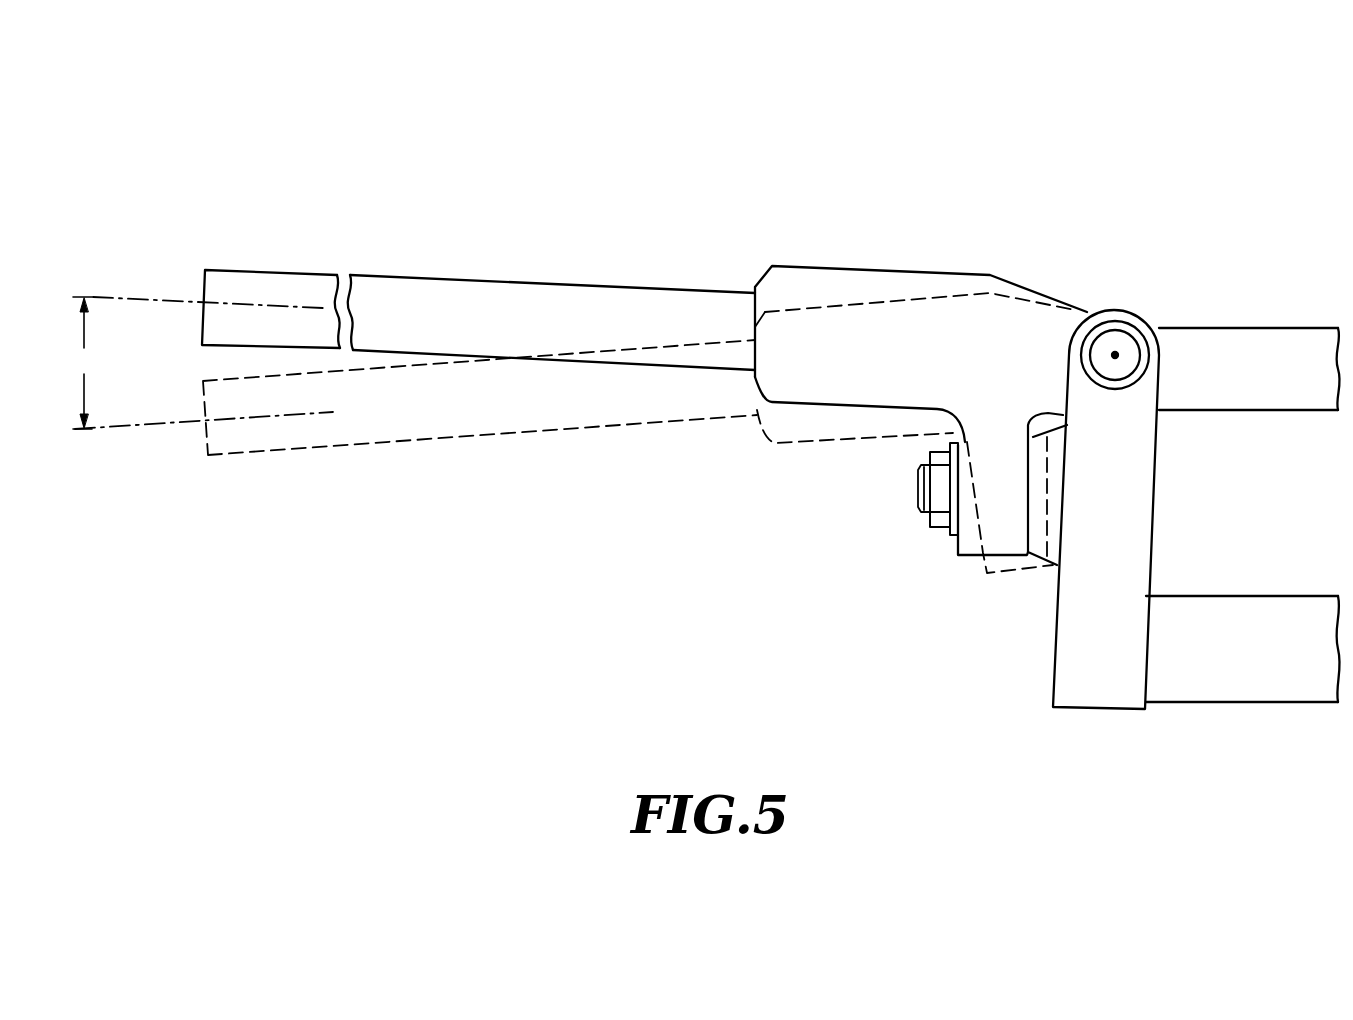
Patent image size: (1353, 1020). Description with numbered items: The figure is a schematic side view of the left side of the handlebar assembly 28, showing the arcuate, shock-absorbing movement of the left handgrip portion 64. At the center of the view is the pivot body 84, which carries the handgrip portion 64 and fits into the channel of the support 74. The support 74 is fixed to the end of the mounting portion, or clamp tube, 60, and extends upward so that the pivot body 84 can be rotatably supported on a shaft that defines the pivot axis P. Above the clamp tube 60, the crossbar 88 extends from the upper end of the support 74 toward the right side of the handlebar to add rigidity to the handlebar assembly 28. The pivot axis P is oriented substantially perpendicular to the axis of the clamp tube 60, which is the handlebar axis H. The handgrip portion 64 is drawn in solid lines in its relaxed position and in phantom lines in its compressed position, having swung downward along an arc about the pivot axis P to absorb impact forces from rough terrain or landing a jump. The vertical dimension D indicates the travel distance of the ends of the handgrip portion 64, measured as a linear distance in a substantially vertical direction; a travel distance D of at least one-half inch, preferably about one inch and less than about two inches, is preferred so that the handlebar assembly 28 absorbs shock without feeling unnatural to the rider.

The handlebar assembly 28 is at (706, 417).
The left handgrip portion 64 is at (515, 283).
The pivot body 84 is at (890, 266).
The pivot axis P is at (1115, 355).
The support 74 is at (1155, 510).
The crossbar 88 is at (1205, 328).
The mounting portion 60 is at (1232, 596).
The handlebar axis H is at (125, 297).
The travel distance D is at (82, 363).